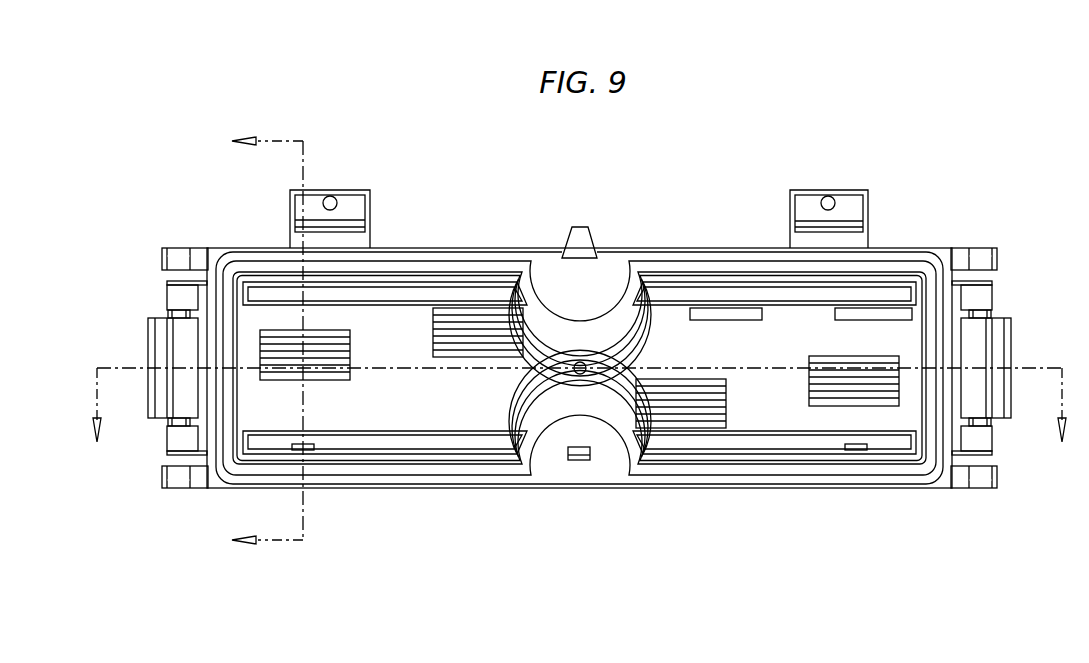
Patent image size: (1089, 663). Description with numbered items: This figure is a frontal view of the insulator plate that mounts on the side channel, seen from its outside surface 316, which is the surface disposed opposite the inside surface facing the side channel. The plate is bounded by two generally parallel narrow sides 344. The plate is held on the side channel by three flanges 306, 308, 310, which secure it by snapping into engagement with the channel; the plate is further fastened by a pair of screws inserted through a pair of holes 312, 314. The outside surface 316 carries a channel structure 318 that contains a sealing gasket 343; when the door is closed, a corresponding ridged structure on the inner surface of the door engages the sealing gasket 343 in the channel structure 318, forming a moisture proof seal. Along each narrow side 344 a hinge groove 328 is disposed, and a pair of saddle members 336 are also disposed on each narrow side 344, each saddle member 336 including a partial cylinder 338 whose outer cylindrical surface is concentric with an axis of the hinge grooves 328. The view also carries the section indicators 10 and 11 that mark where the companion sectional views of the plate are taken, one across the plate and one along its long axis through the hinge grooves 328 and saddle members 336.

The section line 10- 10 is at (254, 340).
The section line 11- 11 is at (579, 419).
The flange 306 is at (307, 444).
The flange 308 is at (575, 461).
The flange 310 is at (850, 451).
The hole 312 is at (333, 197).
The hole 314 is at (828, 197).
The outside surface 316 is at (412, 417).
The channel structure 318 is at (472, 268).
The hinge groove 328 is at (175, 302).
The saddle member 336 is at (172, 247).
The partial cylinder 338 is at (184, 262).
The sealing gasket 343 is at (705, 258).
The narrow side 344 is at (205, 276).